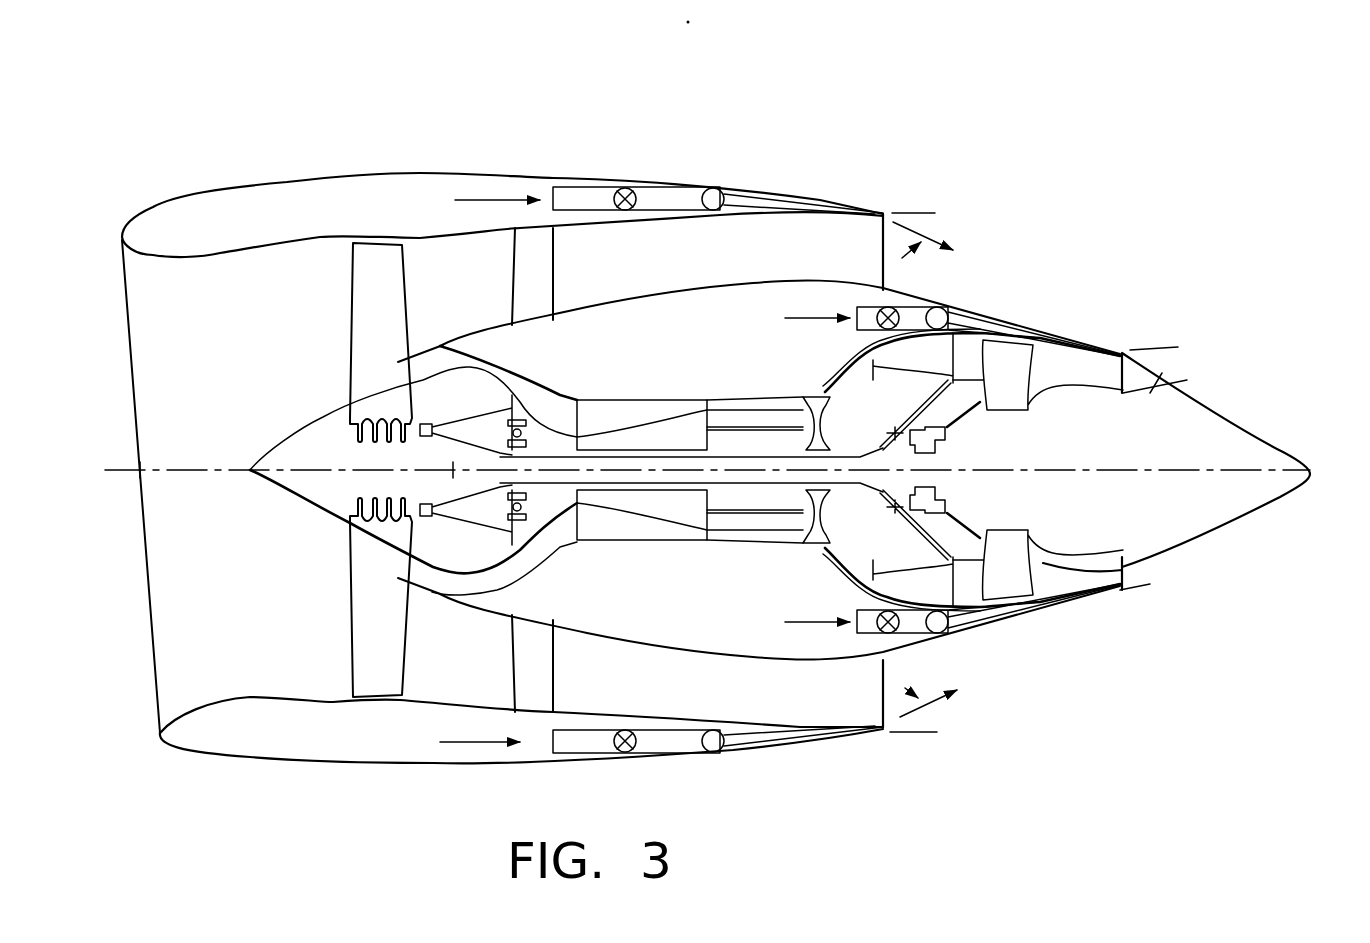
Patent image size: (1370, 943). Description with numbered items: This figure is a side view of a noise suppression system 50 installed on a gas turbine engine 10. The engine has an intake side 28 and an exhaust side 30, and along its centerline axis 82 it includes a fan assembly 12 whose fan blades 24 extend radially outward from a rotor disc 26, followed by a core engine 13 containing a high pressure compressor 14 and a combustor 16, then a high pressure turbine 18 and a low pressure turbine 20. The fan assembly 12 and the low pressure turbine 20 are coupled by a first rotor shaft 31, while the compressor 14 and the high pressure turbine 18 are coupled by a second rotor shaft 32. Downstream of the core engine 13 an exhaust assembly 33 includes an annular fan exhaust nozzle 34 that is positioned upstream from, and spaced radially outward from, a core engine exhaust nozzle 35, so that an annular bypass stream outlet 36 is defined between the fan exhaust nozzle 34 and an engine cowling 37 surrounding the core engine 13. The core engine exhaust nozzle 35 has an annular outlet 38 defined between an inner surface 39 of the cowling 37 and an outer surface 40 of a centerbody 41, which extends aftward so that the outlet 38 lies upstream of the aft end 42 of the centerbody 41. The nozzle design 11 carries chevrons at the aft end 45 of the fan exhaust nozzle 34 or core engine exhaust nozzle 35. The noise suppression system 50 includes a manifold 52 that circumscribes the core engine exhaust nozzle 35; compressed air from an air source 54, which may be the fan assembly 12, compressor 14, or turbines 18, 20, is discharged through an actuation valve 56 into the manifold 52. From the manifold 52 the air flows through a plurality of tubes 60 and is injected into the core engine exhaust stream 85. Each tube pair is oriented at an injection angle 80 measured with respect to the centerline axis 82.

The gas turbine engine 10 is at (866, 43).
The nozzle design 11 is at (648, 598).
The fan assembly 12 is at (483, 585).
The core engine 13 is at (757, 317).
The high pressure compressor 14 is at (600, 410).
The combustor 16 is at (757, 420).
The high pressure turbine 18 is at (815, 400).
The low pressure turbine 20 is at (885, 367).
The fan blades 24 is at (367, 311).
The rotor disc 26 is at (317, 440).
The intake side 28 is at (106, 279).
The exhaust side 30 is at (941, 222).
The first rotor shaft 31 is at (722, 405).
The second rotor shaft 32 is at (737, 457).
The exhaust assembly 33 is at (1078, 227).
The fan exhaust nozzle 34 is at (247, 210).
The core engine exhaust nozzle 35 is at (1048, 333).
The bypass stream outlet 36 is at (889, 270).
The engine cowling 37 is at (977, 308).
The annular outlet 38 is at (1167, 393).
The inner surface 39 is at (1122, 571).
The outer surface 40 is at (1237, 433).
The centerbody 41 is at (1275, 464).
The aft end 42 is at (1318, 474).
The aft end 45 is at (1128, 352).
The noise suppression system 50 is at (1089, 109).
The manifold 52 is at (715, 188).
The air source 54 is at (492, 196).
The actuation valve 56 is at (622, 188).
The tubes 60 is at (1038, 327).
The injection angle 80 is at (927, 206).
The centerline axis 82 is at (238, 470).
The core engine exhaust stream 85 is at (1249, 389).